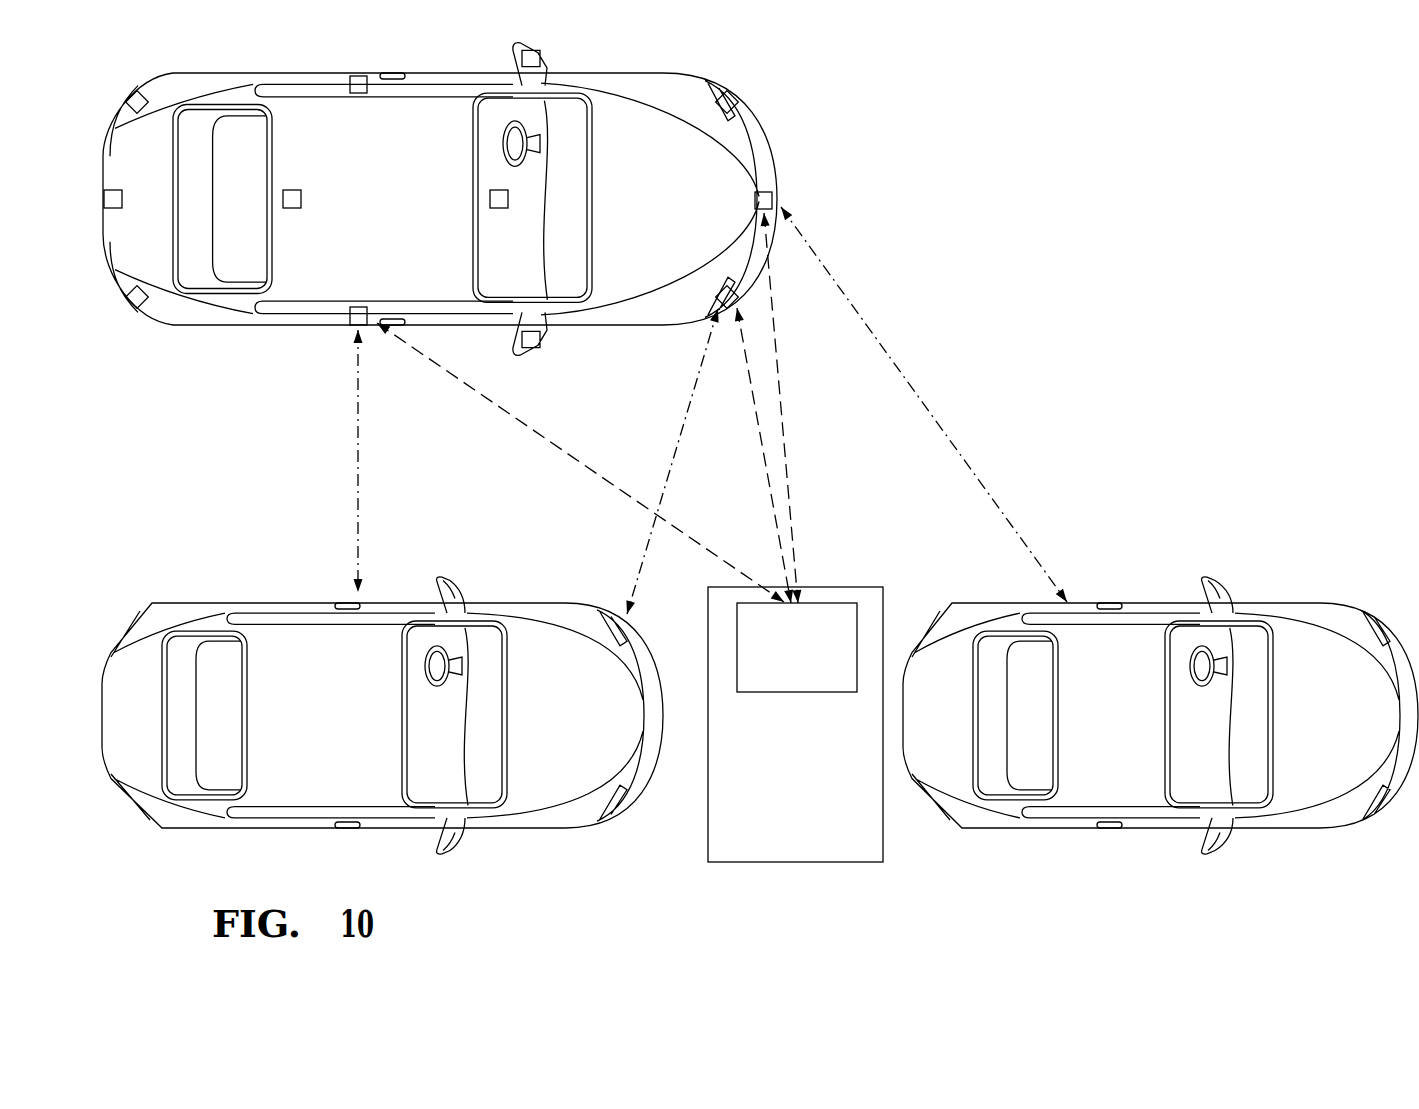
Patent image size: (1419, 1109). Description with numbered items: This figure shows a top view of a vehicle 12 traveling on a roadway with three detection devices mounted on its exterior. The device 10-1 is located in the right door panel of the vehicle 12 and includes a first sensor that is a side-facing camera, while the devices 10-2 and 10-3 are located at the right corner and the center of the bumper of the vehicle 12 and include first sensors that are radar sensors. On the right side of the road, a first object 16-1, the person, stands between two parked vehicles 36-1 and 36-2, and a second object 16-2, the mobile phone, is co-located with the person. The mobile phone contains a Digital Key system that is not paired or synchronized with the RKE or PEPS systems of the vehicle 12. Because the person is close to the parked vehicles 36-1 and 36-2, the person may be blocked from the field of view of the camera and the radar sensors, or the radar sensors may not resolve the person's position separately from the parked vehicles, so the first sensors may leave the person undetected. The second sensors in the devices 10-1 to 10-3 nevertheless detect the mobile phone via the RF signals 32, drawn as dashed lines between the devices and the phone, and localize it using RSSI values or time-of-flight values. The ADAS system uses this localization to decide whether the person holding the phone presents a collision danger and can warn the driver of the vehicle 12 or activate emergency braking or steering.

The vehicle 12 is at (192, 328).
The device 10-1 is at (337, 340).
The device 10-2 is at (712, 287).
The device 10-3 is at (781, 189).
The RF signals 32 is at (533, 432).
The first object 16-1 is at (770, 862).
The second object 16-2 is at (830, 603).
The parked vehicle 36-1 is at (127, 818).
The parked vehicle 36-2 is at (952, 828).